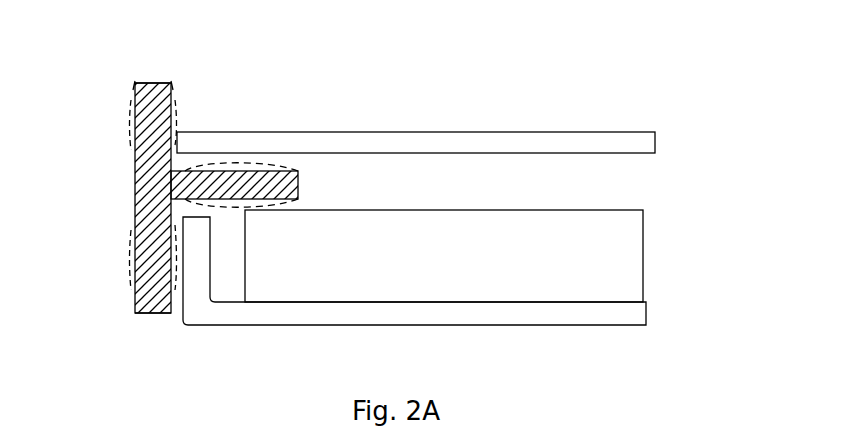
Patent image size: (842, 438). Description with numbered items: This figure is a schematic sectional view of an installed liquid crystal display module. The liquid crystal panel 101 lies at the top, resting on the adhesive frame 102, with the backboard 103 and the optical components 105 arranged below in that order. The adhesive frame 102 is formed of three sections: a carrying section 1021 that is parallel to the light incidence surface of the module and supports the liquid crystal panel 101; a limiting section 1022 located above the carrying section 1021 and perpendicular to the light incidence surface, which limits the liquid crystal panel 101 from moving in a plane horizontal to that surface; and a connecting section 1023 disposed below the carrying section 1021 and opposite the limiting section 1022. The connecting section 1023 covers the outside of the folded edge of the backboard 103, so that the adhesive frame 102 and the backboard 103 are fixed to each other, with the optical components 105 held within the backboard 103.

The liquid crystal panel 101 is at (622, 75).
The adhesive frame 102 is at (135, 185).
The carrying section 1021 is at (298, 181).
The limiting section 1022 is at (145, 64).
The connecting section 1023 is at (144, 327).
The backboard 103 is at (645, 307).
The optical components 105 is at (588, 232).